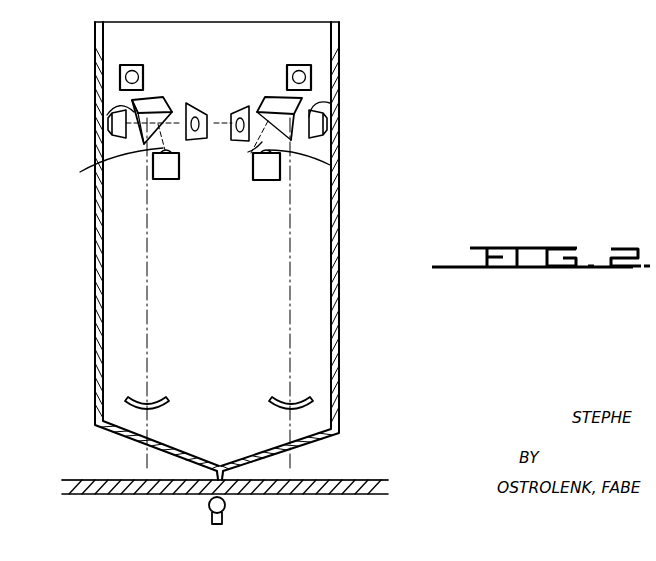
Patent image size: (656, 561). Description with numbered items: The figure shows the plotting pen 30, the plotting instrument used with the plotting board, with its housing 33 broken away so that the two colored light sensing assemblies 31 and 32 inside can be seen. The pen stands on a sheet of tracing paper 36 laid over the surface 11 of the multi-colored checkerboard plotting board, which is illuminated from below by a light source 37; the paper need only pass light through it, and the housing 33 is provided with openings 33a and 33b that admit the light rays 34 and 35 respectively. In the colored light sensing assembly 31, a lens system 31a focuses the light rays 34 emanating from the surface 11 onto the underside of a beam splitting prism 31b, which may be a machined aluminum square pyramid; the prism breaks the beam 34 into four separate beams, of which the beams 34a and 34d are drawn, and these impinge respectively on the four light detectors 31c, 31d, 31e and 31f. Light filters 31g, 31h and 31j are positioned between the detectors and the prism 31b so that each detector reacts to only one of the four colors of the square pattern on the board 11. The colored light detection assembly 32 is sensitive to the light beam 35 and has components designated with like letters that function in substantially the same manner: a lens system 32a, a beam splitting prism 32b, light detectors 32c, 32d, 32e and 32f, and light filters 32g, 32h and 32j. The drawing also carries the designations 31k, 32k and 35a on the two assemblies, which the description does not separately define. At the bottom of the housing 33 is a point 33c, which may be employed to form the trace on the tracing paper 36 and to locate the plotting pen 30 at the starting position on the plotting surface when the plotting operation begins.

The plotting board surface 11 is at (323, 495).
The plotting pen 30 is at (108, 447).
The colored light sensing assembly 31 is at (312, 38).
The lens system 31a is at (281, 397).
The beam splitting prism 31b is at (262, 90).
The light detector 31c is at (312, 70).
The light detector 31d is at (327, 125).
The light detector 31e is at (265, 181).
The light detector 31f is at (245, 108).
The light filter 31g is at (311, 78).
The light filter 31h is at (328, 110).
The light filter 31j is at (330, 165).
The apertured plate 31k is at (237, 112).
The colored light detection assembly 32 is at (142, 35).
The lens system 32a is at (156, 397).
The beam splitting prism 32b is at (170, 90).
The light detector 32c is at (120, 69).
The light detector 32d is at (110, 130).
The light detector 32e is at (167, 181).
The light detector 32f is at (166, 147).
The light filter 32g is at (128, 79).
The light filter 32h is at (106, 110).
The light filter 32j is at (107, 162).
The apertured plate 32k is at (197, 105).
The housing 33 is at (95, 342).
The opening 33a is at (282, 442).
The opening 33b is at (157, 443).
The point 33c is at (216, 473).
The light rays 34 is at (288, 308).
The separate beam 34a is at (284, 97).
The separate beam 34d is at (260, 142).
The light beam 35 is at (149, 308).
The prism top face 35a is at (146, 100).
The tracing paper 36 is at (340, 476).
The light source 37 is at (229, 509).